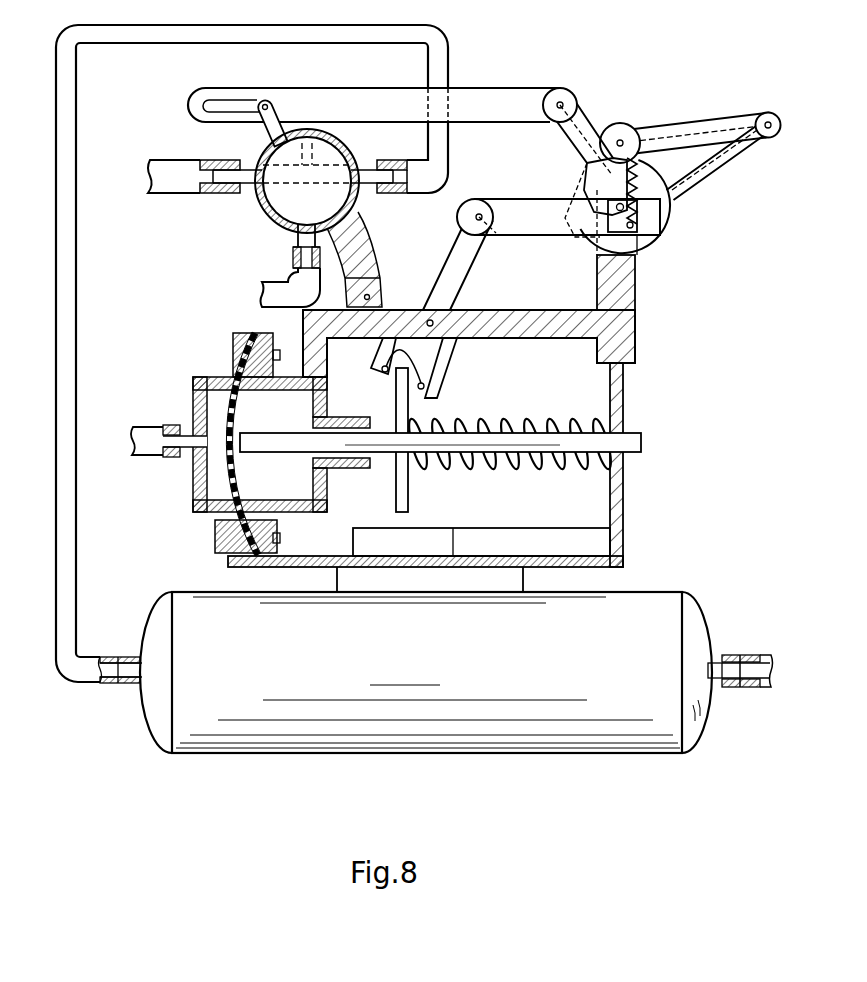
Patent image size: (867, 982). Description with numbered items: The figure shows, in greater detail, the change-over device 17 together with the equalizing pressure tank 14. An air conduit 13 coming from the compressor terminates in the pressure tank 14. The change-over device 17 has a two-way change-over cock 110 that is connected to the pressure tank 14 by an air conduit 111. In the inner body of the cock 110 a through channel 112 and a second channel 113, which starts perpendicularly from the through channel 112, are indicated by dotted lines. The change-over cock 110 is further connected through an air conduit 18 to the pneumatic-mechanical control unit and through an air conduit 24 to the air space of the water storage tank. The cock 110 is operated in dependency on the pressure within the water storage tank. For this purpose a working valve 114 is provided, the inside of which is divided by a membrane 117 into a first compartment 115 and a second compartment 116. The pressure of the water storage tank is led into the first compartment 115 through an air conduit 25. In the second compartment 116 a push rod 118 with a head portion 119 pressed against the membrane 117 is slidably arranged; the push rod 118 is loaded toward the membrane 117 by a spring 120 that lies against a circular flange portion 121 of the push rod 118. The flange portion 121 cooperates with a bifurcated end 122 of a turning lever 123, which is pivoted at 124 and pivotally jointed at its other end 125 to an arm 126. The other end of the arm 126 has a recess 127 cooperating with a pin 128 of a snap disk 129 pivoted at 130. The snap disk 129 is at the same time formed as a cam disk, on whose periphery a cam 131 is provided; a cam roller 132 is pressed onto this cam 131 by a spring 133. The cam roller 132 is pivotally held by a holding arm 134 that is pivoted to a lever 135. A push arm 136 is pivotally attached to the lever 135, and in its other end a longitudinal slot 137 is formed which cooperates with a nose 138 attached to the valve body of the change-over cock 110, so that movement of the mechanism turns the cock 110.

The air conduit 13 is at (760, 688).
The equalizing pressure tank 14 is at (430, 744).
The change-over device 17 is at (568, 58).
The air conduit 18 is at (177, 172).
The air conduit 24 is at (273, 292).
The air conduit 25 is at (140, 428).
The two-way change-over cock 110 is at (365, 201).
The air conduit 111 is at (73, 220).
The through channel 112 is at (268, 160).
The second channel 113 is at (340, 154).
The working valve 114 is at (210, 370).
The first compartment 115 is at (212, 497).
The second compartment 116 is at (297, 492).
The membrane 117 is at (228, 467).
The push rod 118 is at (388, 447).
The head portion 119 is at (246, 430).
The spring 120 is at (572, 418).
The circular flange portion 121 is at (398, 377).
The bifurcated end 122 is at (437, 372).
The turning lever 123 is at (466, 270).
The pivot 124 is at (427, 320).
The other end 125 is at (478, 207).
The arm 126 is at (508, 224).
The recess 127 is at (592, 258).
The pin 128 is at (636, 235).
The snap disk 129 is at (680, 206).
The pivot 130 is at (652, 230).
The cam 131 is at (583, 188).
The cam roller 132 is at (620, 122).
The spring 133 is at (638, 120).
The holding arm 134 is at (704, 132).
The lever 135 is at (567, 140).
The push arm 136 is at (397, 100).
The longitudinal slot 137 is at (203, 104).
The nose 138 is at (272, 72).